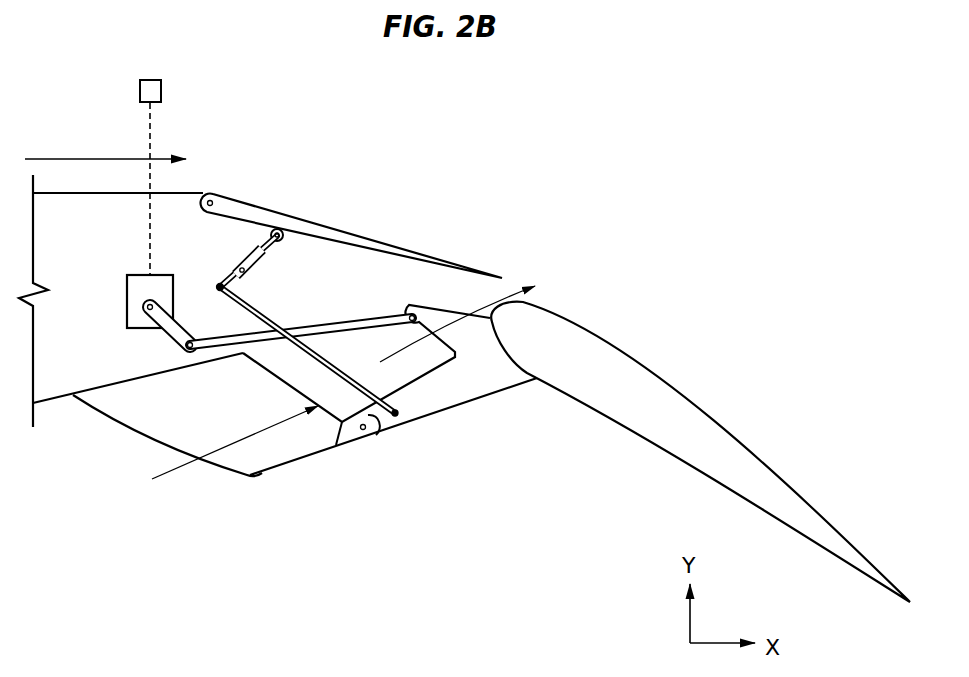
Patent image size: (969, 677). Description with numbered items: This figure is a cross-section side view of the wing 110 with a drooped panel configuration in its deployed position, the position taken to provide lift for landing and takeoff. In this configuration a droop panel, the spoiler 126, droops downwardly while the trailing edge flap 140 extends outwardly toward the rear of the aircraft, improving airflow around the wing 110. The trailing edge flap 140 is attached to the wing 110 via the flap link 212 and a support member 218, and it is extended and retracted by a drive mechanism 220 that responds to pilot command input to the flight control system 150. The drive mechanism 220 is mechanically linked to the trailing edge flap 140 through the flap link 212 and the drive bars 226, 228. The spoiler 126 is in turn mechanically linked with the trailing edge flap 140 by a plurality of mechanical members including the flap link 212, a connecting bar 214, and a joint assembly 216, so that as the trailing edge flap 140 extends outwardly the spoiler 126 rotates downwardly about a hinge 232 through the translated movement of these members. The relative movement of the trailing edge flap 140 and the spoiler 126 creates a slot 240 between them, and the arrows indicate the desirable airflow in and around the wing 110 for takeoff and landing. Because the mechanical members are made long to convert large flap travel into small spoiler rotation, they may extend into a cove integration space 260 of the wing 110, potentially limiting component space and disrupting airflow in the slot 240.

The wing 110 is at (505, 563).
The spoiler 126 is at (351, 233).
The trailing edge flap 140 is at (734, 433).
The flight control system 150 is at (140, 92).
The flap link 212 is at (451, 396).
The connecting bar 214 is at (298, 352).
The joint assembly 216 is at (260, 256).
The support member 218 is at (273, 460).
The drive mechanism 220 is at (127, 287).
The drive bar 226 is at (162, 338).
The drive bar 228 is at (208, 350).
The hinge 232 is at (210, 200).
The slot 240 is at (524, 279).
The cove integration space 260 is at (83, 442).